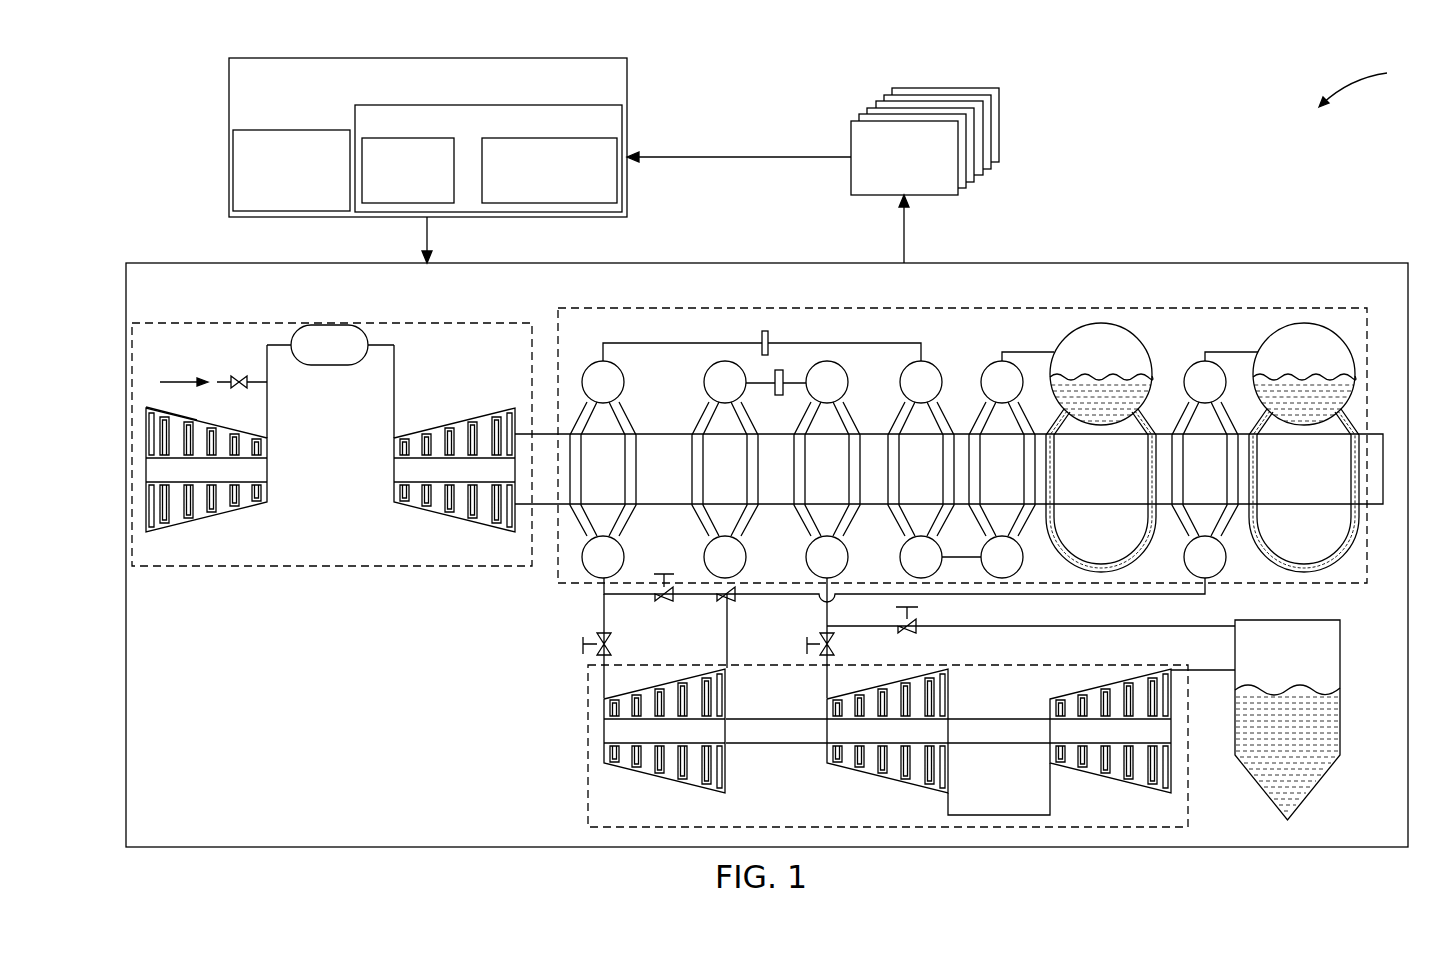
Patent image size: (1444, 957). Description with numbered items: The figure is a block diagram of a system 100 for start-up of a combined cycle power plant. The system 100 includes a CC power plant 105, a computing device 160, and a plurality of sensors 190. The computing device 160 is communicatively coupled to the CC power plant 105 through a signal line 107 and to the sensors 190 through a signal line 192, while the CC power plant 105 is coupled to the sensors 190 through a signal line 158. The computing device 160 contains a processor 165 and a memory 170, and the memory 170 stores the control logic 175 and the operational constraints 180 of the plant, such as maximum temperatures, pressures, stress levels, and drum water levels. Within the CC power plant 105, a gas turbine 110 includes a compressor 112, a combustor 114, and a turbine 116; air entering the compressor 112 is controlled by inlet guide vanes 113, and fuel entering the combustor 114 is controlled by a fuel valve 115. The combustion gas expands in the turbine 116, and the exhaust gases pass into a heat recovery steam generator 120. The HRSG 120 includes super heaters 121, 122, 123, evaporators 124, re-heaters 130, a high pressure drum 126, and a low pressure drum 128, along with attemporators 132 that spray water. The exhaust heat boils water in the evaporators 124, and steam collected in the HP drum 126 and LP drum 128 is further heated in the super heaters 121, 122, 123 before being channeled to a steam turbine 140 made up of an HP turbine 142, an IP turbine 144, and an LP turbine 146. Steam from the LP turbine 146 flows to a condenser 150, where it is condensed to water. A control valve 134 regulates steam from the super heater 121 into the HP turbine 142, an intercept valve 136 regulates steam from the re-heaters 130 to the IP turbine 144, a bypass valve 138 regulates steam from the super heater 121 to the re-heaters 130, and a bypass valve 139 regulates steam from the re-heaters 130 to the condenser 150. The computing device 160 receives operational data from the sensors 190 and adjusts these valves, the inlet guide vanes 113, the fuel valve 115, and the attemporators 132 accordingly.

The system 100 is at (1370, 85).
The CC power plant 105 is at (738, 260).
The signal line 107 is at (430, 233).
The gas turbine 110 is at (482, 322).
The compressor 112 is at (210, 515).
The inlet guide vanes 113 is at (197, 422).
The combustor 114 is at (337, 367).
The fuel valve 115 is at (238, 377).
The turbine 116 is at (453, 517).
The heat recovery steam generator 120 is at (573, 308).
The super heater 121 is at (630, 413).
The super heater 122 is at (982, 378).
The super heater 123 is at (1178, 410).
The evaporators 124 is at (1258, 463).
The high pressure drum 126 is at (1062, 340).
The low pressure drum 128 is at (1262, 338).
The re-heaters 130 is at (792, 470).
The attemporators 132 is at (780, 370).
The control valve 134 is at (582, 642).
The intercept valve 136 is at (805, 642).
The bypass valve 138 is at (665, 573).
The bypass valve 139 is at (912, 616).
The steam turbine 140 is at (587, 780).
The HP turbine 142 is at (703, 789).
The IP turbine 144 is at (927, 789).
The LP turbine 146 is at (1152, 792).
The condenser 150 is at (1340, 660).
The signal line 158 is at (907, 225).
The computing device 160 is at (628, 72).
The processor 165 is at (233, 150).
The memory 170 is at (622, 115).
The control logic 175 is at (455, 147).
The operational constraints 180 is at (620, 197).
The sensors 190 is at (1003, 122).
The signal line 192 is at (740, 155).